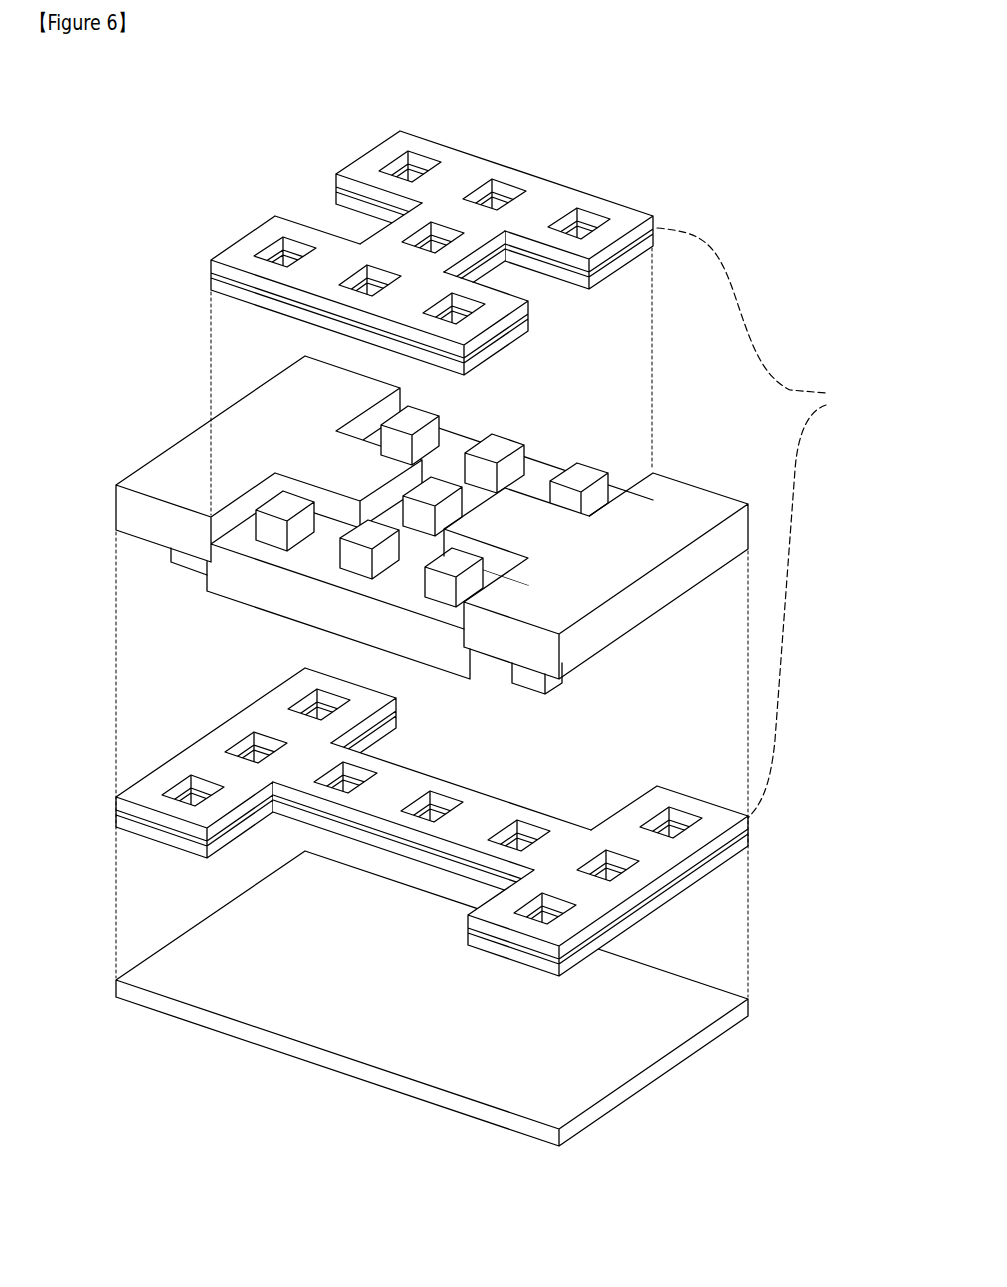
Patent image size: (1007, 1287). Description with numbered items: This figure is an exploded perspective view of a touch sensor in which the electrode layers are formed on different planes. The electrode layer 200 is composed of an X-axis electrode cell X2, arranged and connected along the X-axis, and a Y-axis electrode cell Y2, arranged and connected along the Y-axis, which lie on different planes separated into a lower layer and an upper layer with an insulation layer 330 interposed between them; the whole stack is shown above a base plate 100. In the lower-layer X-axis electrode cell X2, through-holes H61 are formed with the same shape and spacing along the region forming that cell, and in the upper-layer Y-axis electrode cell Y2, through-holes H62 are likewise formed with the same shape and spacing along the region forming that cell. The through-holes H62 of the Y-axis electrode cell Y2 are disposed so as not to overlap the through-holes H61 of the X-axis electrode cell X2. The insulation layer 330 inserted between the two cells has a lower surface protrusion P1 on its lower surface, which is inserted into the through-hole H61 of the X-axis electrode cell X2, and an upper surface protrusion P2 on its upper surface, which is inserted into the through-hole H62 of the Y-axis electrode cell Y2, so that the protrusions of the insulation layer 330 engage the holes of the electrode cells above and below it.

The substrate 100 is at (336, 1068).
The electrode layer 200 is at (760, 523).
The insulation layer 330 is at (432, 551).
The X-axis electrode cell X2 is at (432, 814).
The Y-axis electrode cell Y2 is at (432, 220).
The lower surface protrusion P1 is at (532, 680).
The upper surface protrusion P2 is at (578, 485).
The through-hole H61 is at (668, 798).
The through-hole H62 is at (585, 218).